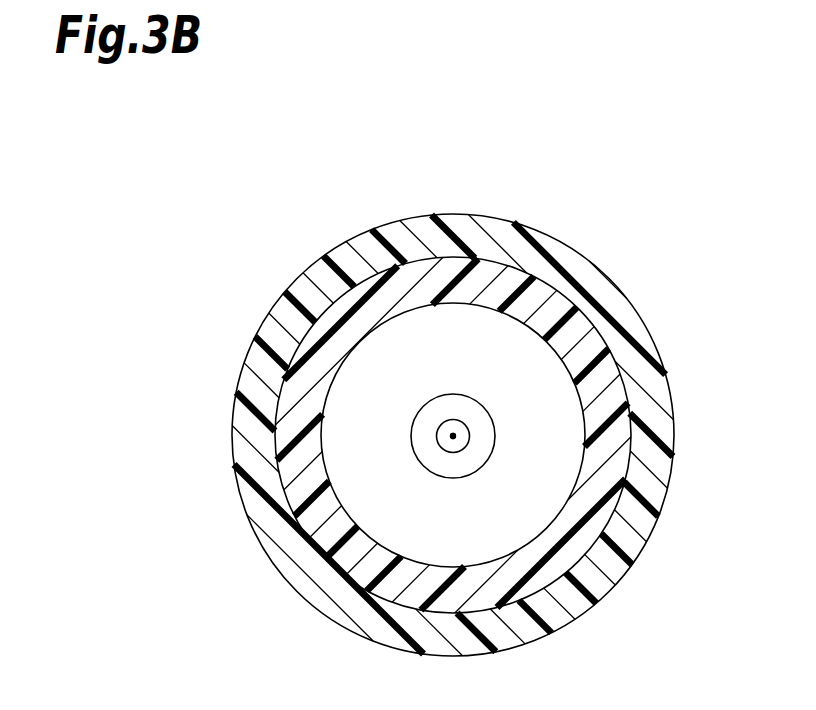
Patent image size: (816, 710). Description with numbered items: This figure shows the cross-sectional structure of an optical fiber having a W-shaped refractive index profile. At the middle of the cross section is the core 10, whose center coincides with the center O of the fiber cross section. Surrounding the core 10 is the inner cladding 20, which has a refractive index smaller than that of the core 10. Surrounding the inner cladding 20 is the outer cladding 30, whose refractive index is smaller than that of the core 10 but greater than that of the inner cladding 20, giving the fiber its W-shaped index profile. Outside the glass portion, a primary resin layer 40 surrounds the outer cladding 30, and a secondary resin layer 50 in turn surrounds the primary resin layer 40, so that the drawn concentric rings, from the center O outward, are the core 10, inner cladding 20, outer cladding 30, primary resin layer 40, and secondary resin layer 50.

The core 10 is at (453, 436).
The inner cladding 20 is at (483, 423).
The outer cladding 30 is at (553, 437).
The primary resin layer 40 is at (605, 478).
The secondary resin layer 50 is at (638, 527).
The center of the fiber cross section O is at (453, 436).